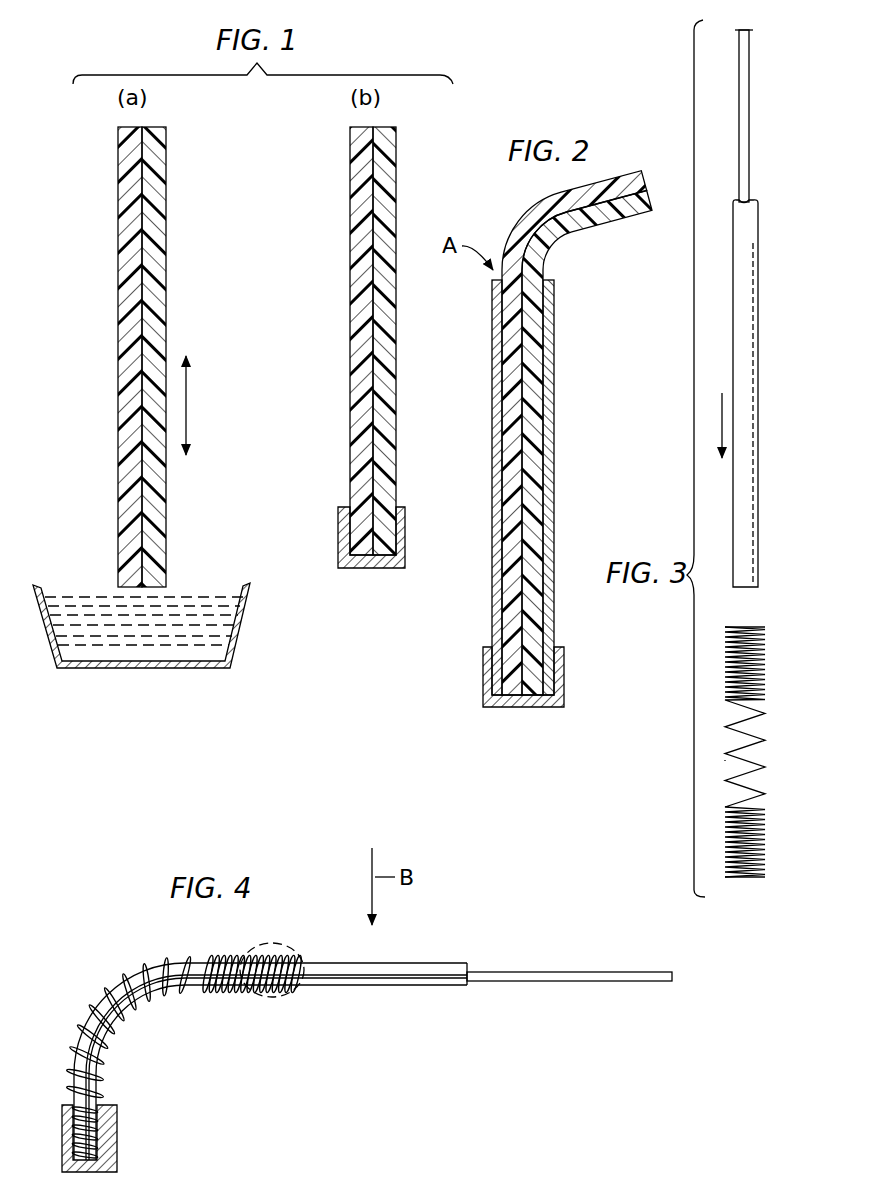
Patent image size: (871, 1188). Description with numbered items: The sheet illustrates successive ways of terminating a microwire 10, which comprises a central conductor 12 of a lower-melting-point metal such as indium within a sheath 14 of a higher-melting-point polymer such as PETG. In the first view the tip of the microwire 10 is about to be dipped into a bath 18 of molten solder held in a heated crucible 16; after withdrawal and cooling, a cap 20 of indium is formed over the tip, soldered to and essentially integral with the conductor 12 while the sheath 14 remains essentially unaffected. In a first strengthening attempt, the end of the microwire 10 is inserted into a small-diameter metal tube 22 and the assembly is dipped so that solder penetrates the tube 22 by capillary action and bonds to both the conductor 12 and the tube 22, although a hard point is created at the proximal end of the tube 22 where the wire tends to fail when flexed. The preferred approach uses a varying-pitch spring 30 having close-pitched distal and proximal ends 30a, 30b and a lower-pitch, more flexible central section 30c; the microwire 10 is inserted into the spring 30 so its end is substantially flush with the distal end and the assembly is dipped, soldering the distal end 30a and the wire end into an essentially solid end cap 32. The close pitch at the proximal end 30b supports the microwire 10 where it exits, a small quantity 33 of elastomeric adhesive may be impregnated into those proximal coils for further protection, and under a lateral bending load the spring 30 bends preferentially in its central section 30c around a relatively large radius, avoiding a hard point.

In FIG. 1, the microwire 10 is at (214, 354).
In FIG. 2, the microwire 10 is at (558, 433).
In FIG. 3, the microwire 10 is at (773, 308).
In FIG. 4, the microwire 10 is at (373, 1033).
In FIG. 1, the central conductor 12 is at (142, 185).
In FIG. 2, the central conductor 12 is at (614, 206).
In FIG. 3, the central conductor 12 is at (750, 91).
In FIG. 4, the central conductor 12 is at (598, 972).
In FIG. 1, the sheath 14 is at (118, 148).
In FIG. 2, the sheath 14 is at (563, 207).
In FIG. 3, the sheath 14 is at (759, 310).
In FIG. 4, the sheath 14 is at (438, 985).
In FIG. 1, the crucible 16 is at (236, 640).
In FIG. 1, the bath 18 is at (190, 606).
In FIG. 1, the cap 20 is at (338, 521).
In FIG. 2, the cap 20 is at (482, 675).
In FIG. 2, the metal tube 22 is at (555, 450).
In FIG. 3, the varying-pitch spring 30 is at (774, 761).
In FIG. 4, the varying-pitch spring 30 is at (193, 1028).
In FIG. 3, the distal end of spring 30a is at (767, 857).
In FIG. 3, the proximal end of spring 30b is at (767, 647).
In FIG. 3, the central section of spring 30c is at (767, 778).
In FIG. 4, the end cap 32 is at (116, 1138).
In FIG. 4, the quantity of elastomeric adhesive 33 is at (276, 943).